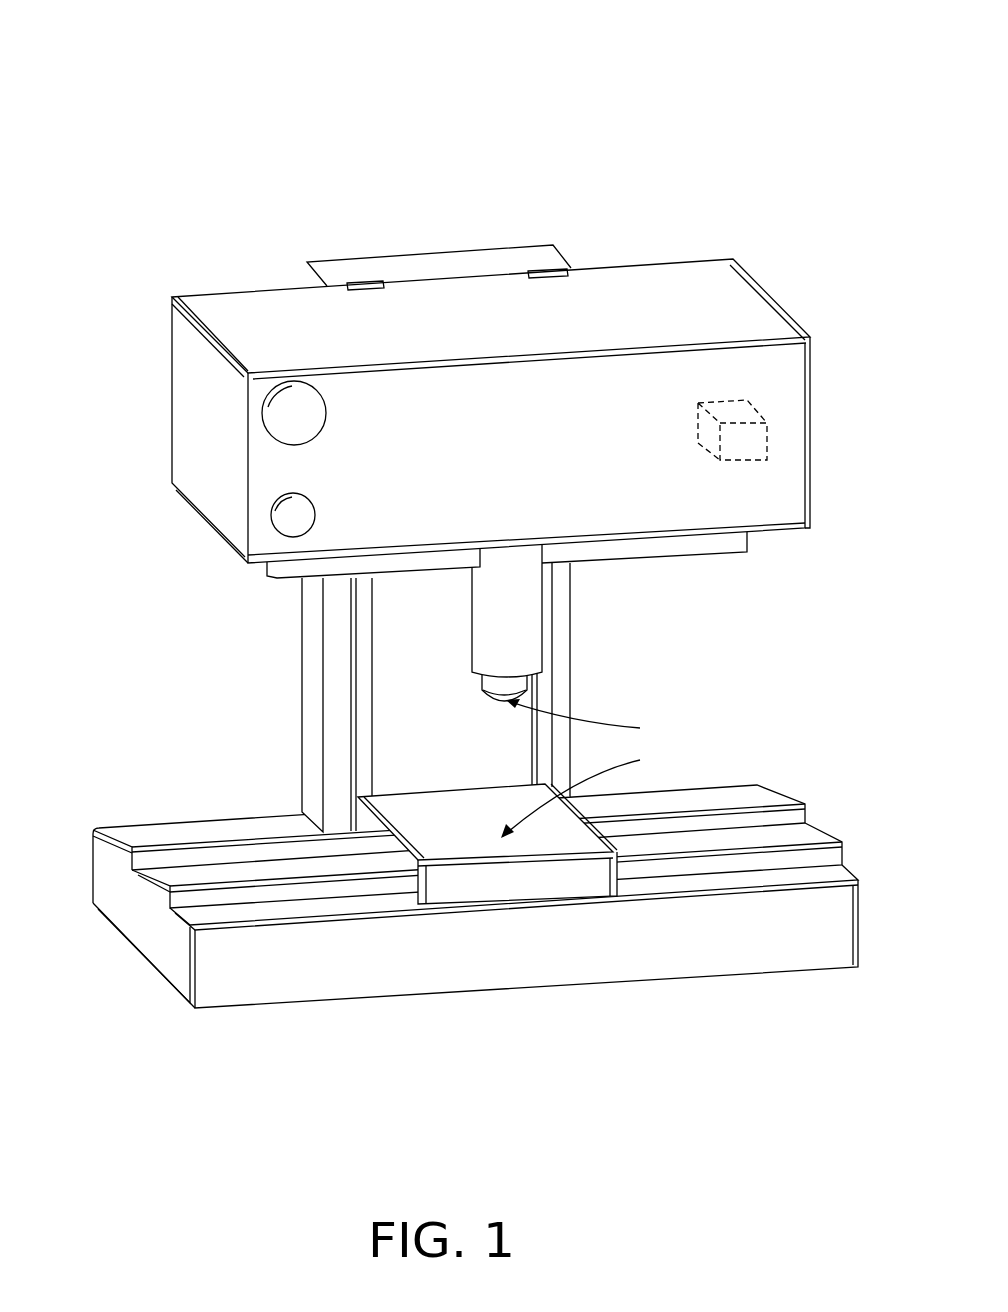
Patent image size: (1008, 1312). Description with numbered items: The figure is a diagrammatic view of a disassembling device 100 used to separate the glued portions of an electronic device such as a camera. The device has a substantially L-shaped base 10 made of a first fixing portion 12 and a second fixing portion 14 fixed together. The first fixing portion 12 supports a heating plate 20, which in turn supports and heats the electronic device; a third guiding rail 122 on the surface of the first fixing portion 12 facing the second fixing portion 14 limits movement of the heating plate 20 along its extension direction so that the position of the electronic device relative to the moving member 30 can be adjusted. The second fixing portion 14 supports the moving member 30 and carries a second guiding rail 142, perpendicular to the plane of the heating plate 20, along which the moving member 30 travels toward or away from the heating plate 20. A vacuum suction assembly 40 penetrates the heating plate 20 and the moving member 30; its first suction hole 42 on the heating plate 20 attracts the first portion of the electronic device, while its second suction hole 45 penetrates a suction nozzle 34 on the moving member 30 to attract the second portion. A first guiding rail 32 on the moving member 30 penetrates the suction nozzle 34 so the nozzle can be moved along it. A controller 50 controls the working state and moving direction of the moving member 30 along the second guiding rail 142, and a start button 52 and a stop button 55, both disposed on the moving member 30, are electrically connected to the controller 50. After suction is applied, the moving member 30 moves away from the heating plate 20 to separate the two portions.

The disassembling device 100 is at (470, 62).
The base 10 is at (163, 708).
The first fixing portion 12 is at (275, 822).
The third guiding rail 122 is at (193, 896).
The second fixing portion 14 is at (312, 728).
The second guiding rail 142 is at (365, 652).
The heating plate 20 is at (492, 884).
The moving member 30 is at (780, 483).
The first guiding rail 32 is at (673, 550).
The suction nozzle 34 is at (523, 635).
The vacuum suction assembly 40 is at (685, 713).
The first suction hole 42 is at (591, 789).
The second suction hole 45 is at (592, 721).
The controller 50 is at (757, 437).
The start button 52 is at (290, 523).
The stop button 55 is at (287, 418).